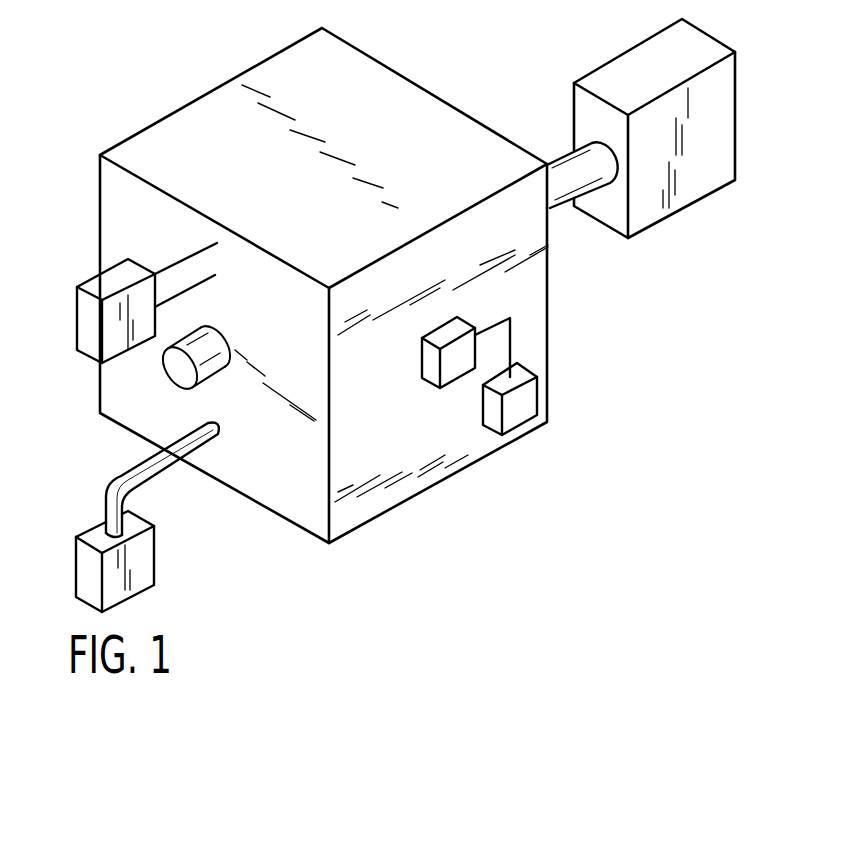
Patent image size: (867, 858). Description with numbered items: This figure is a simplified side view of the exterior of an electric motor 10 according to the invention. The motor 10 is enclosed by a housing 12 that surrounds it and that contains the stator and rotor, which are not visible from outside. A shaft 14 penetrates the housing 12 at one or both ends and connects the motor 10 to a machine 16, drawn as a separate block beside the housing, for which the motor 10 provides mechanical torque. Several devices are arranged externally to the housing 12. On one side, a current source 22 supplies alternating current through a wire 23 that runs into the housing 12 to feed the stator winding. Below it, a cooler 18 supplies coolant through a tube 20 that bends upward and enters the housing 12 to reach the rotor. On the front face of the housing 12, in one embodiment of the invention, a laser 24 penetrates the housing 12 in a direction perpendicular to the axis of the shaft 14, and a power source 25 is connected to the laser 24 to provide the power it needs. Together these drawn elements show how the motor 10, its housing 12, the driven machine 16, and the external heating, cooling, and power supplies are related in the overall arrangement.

The electric motor 10 is at (422, 30).
The housing 12 is at (542, 330).
The shaft 14 is at (553, 210).
The machine 16 is at (725, 140).
The cooler 18 is at (108, 580).
The tube 20 is at (103, 513).
The current source 22 is at (92, 282).
The wire 23 is at (180, 263).
The laser 24 is at (455, 370).
The power source 25 is at (523, 395).